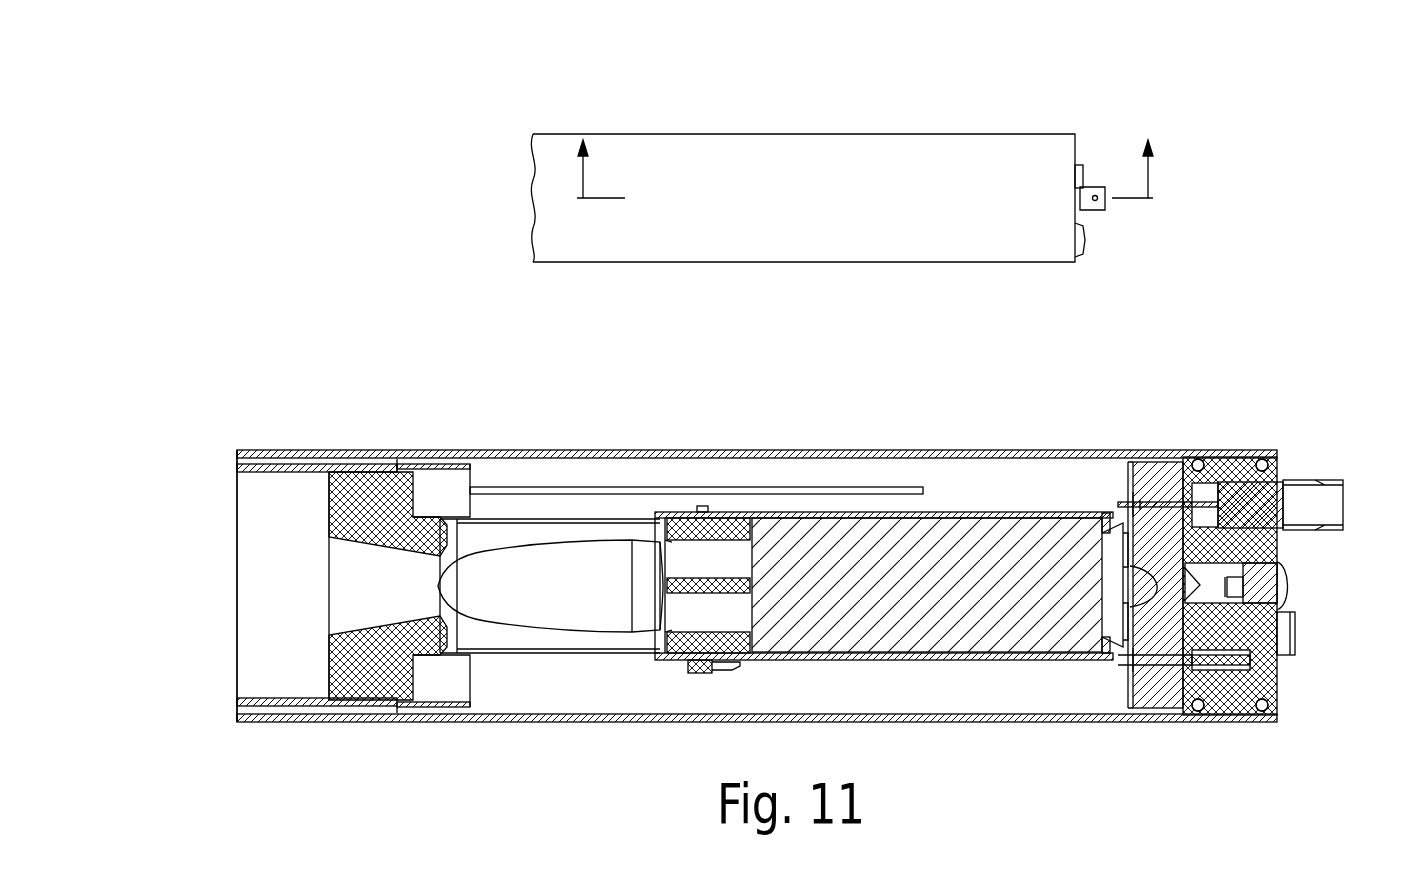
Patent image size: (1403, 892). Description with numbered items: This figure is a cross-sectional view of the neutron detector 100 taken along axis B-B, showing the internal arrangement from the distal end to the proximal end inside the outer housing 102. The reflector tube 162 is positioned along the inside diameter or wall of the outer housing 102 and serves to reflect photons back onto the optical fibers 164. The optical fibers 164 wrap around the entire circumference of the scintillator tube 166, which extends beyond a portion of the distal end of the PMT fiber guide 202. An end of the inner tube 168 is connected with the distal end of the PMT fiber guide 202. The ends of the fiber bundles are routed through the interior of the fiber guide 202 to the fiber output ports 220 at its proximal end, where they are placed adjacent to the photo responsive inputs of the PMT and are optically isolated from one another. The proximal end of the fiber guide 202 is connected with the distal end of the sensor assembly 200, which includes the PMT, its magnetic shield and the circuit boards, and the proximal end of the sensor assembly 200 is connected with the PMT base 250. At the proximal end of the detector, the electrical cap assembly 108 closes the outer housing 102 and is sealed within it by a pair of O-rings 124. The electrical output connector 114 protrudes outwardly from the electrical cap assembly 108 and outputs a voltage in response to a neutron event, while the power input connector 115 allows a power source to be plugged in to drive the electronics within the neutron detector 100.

The neutron detector 100 is at (812, 88).
The outer housing 102 is at (722, 134).
The electrical cap assembly 108 is at (1081, 145).
The electrical output connector 114 is at (1297, 480).
The power input connector 115 is at (1296, 633).
The O-rings 124 is at (1199, 458).
The reflector tube 162 is at (248, 453).
The optical fibers 164 is at (293, 462).
The scintillator tube 166 is at (377, 467).
The inner tube 168 is at (331, 470).
The sensor assembly 200 is at (947, 555).
The PMT fiber guide 202 is at (568, 659).
The fiber output ports 220 is at (725, 560).
The PMT base 250 is at (1163, 462).